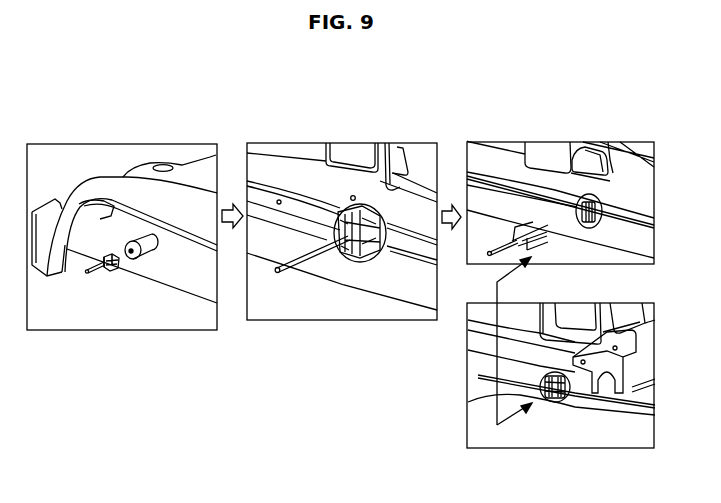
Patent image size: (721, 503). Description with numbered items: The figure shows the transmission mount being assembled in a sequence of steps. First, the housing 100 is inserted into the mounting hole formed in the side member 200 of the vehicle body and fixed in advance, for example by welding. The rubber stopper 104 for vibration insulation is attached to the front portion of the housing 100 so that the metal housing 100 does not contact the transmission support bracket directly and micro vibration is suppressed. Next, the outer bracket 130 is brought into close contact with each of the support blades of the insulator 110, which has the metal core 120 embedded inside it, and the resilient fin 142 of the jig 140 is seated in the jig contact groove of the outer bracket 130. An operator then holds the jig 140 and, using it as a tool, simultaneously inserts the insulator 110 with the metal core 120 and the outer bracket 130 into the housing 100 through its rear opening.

The housing 100 is at (135, 268).
The rubber stopper 104 is at (562, 402).
The insulator 110 is at (378, 258).
The metal core 120 is at (337, 266).
The outer bracket 130 is at (388, 207).
The jig 140 is at (90, 278).
The resilient fin 142 is at (353, 196).
The side member 200 is at (174, 270).